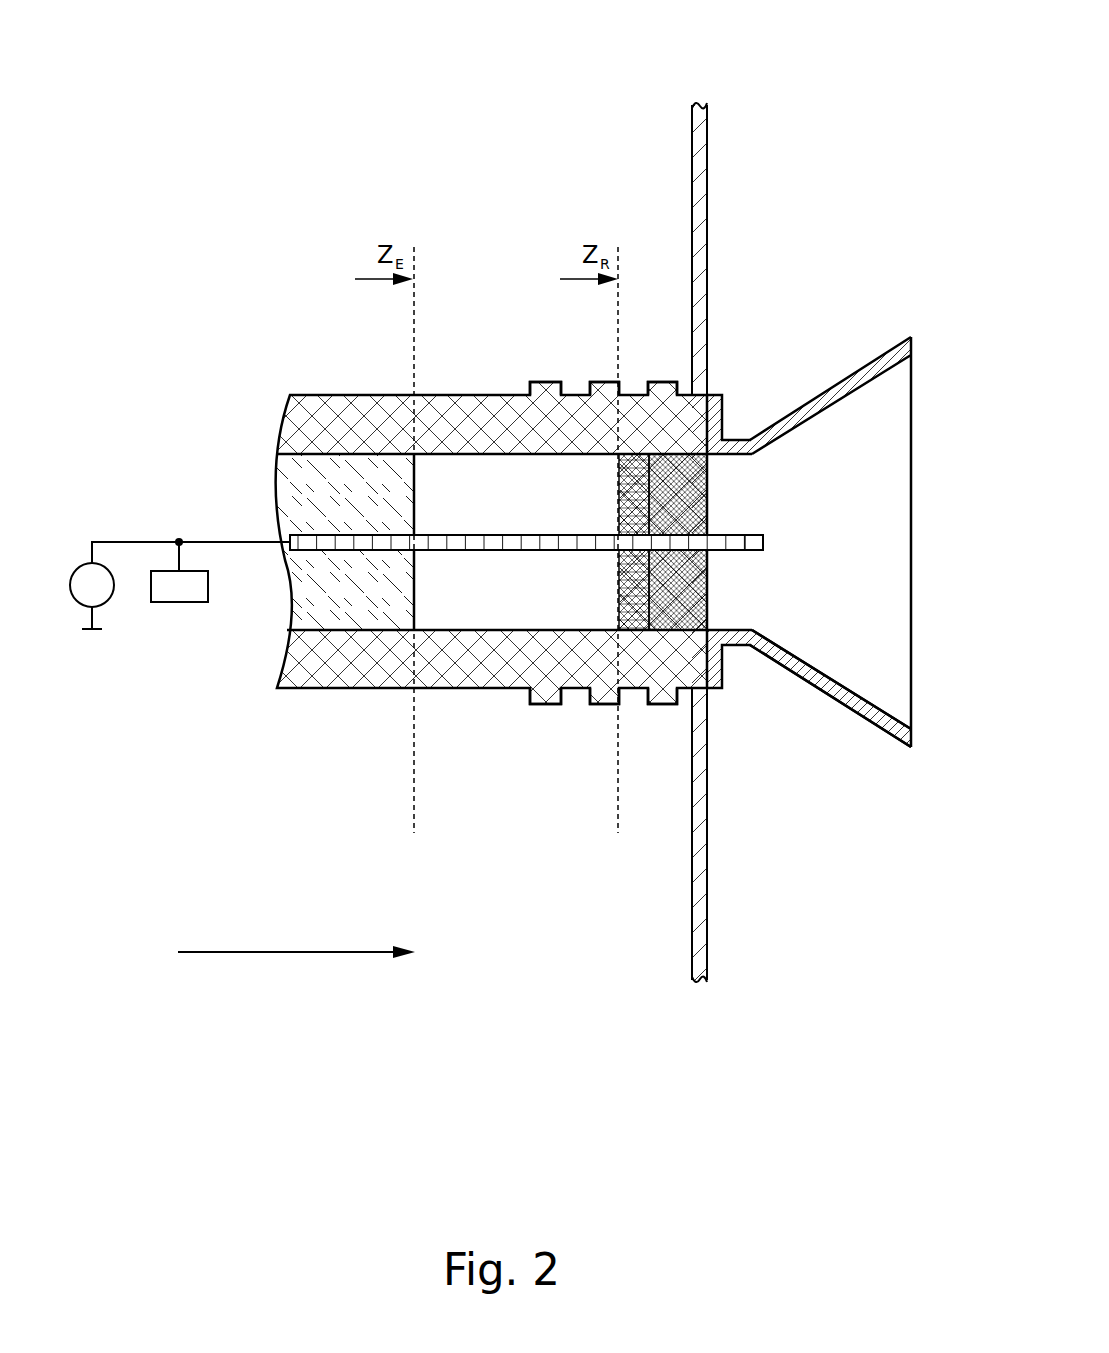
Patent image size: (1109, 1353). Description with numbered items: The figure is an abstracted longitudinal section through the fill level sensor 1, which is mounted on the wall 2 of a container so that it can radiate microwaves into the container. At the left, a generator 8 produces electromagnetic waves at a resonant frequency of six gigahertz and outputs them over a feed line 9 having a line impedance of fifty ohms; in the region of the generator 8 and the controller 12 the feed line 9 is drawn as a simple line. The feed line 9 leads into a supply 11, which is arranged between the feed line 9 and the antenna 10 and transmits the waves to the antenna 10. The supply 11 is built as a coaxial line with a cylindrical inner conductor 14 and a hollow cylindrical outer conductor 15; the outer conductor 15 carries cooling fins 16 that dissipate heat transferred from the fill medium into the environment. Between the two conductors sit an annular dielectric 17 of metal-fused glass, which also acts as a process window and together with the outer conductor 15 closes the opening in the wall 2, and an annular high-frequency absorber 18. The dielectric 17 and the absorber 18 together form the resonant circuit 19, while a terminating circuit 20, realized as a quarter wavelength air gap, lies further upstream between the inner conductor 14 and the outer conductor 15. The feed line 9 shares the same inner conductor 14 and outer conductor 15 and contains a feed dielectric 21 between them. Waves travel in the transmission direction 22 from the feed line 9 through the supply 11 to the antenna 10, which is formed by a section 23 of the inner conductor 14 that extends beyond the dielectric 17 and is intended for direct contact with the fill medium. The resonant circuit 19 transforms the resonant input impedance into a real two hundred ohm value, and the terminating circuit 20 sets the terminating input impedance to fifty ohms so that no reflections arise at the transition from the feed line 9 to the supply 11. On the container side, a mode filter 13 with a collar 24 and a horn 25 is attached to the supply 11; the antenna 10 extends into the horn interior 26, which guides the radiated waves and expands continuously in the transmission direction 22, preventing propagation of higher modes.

The fill level sensor 1 is at (213, 110).
The wall 2 is at (702, 139).
The generator 8 is at (92, 596).
The feed line 9 is at (243, 541).
The antenna 10 is at (762, 545).
The supply 11 is at (437, 170).
The controller 12 is at (179, 572).
The mode filter 13 is at (861, 355).
The inner conductor 14 is at (493, 542).
The outer conductor 15 is at (503, 677).
The cooling fins 16 is at (663, 388).
The dielectric 17 is at (690, 595).
The high-frequency absorber 18 is at (638, 610).
The resonant circuit 19 is at (715, 477).
The terminating circuit 20 is at (435, 605).
The feed dielectric 21 is at (322, 583).
The transmission direction 22 is at (268, 952).
The section 23 is at (708, 532).
The collar 24 is at (733, 404).
The horn 25 is at (820, 680).
The horn interior 26 is at (838, 498).